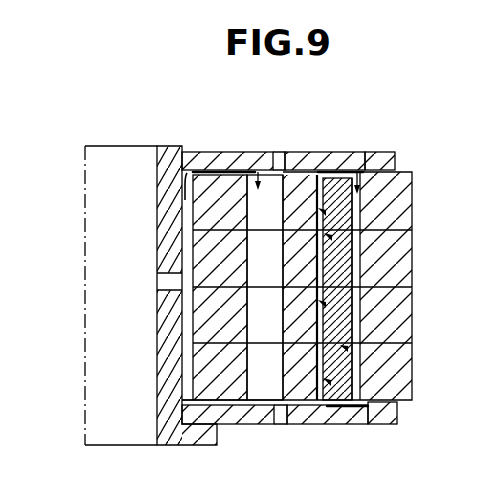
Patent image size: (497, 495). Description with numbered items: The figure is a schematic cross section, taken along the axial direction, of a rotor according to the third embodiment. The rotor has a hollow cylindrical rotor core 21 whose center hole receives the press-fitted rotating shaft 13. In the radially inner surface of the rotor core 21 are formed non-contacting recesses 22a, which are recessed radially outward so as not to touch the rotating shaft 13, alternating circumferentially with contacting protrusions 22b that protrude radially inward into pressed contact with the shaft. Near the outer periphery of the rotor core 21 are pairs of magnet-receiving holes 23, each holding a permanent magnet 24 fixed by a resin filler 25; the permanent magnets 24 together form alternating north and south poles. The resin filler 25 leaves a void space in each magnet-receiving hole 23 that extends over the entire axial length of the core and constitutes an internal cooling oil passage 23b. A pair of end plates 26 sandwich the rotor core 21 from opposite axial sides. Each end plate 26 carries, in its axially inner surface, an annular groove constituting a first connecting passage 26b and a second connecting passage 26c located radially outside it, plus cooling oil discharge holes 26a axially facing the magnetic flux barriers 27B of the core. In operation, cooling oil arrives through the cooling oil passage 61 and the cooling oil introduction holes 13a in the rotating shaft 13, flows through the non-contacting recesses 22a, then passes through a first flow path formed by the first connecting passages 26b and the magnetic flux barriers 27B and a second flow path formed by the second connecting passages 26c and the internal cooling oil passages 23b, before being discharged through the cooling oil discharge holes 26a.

The rotating shaft 13 is at (153, 148).
The cooling oil introduction holes 13a is at (157, 293).
The cooling oil passage 61 is at (103, 368).
The contacting protrusions 22b is at (157, 202).
The non-contacting recesses 22a is at (188, 247).
The magnetic flux barriers 27B is at (275, 362).
The rotor core 21 is at (412, 305).
The magnet-receiving holes 23 is at (332, 180).
The internal cooling oil passage 23b is at (340, 255).
The permanent magnets 24 is at (325, 238).
The resin filler 25 is at (306, 175).
The end plates 26 is at (384, 152).
The cooling oil discharge holes 26a is at (278, 152).
The first connecting passage 26b is at (216, 152).
The second connecting passage 26c is at (352, 160).